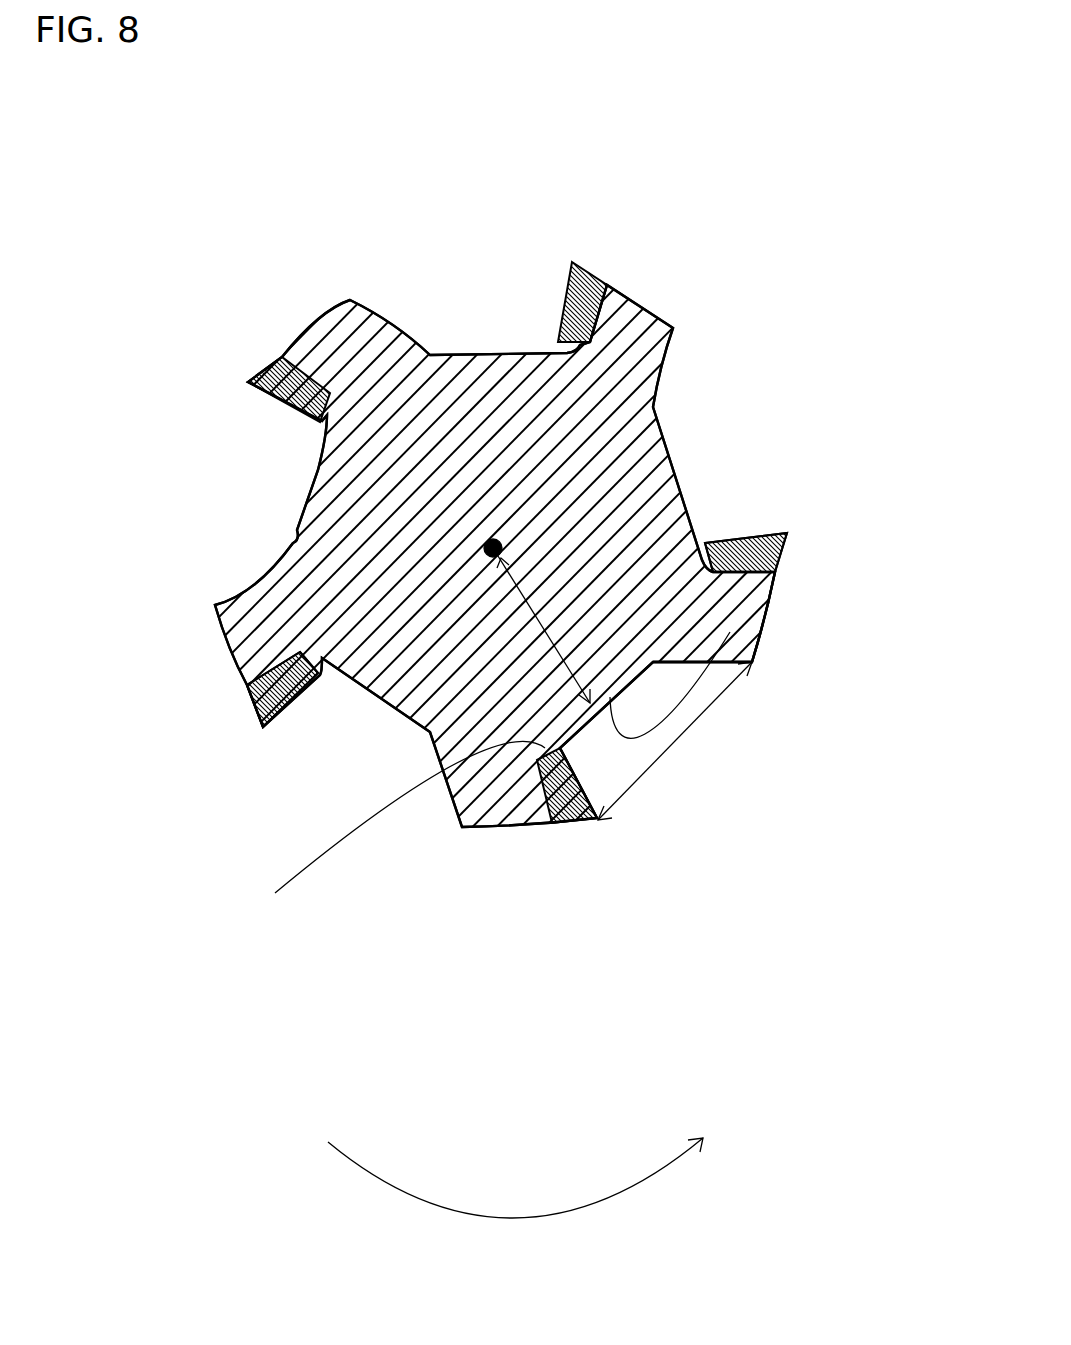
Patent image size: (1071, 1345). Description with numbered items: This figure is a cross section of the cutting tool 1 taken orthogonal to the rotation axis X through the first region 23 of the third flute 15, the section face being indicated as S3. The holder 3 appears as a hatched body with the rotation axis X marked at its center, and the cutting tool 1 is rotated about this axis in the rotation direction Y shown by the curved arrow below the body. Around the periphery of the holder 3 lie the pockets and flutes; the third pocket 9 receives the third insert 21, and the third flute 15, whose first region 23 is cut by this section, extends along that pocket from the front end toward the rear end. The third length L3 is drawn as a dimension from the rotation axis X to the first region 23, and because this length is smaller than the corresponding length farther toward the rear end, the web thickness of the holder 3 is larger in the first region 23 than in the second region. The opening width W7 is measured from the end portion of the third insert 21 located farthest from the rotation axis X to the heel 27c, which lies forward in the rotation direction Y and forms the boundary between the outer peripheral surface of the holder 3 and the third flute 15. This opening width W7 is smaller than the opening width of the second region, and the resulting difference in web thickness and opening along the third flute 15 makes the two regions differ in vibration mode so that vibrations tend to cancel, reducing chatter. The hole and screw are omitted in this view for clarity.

The cutting tool 1 is at (672, 232).
The holder 3 is at (337, 350).
The cross section S3 is at (497, 382).
The third pocket 9 is at (397, 836).
The third flute 15 is at (773, 533).
The first region 23 is at (517, 630).
The third insert 21 is at (570, 820).
The heel 27c is at (752, 662).
The rotation axis X is at (488, 546).
The third length L3 is at (530, 600).
The opening width W7 is at (653, 767).
The rotation direction Y is at (515, 1211).